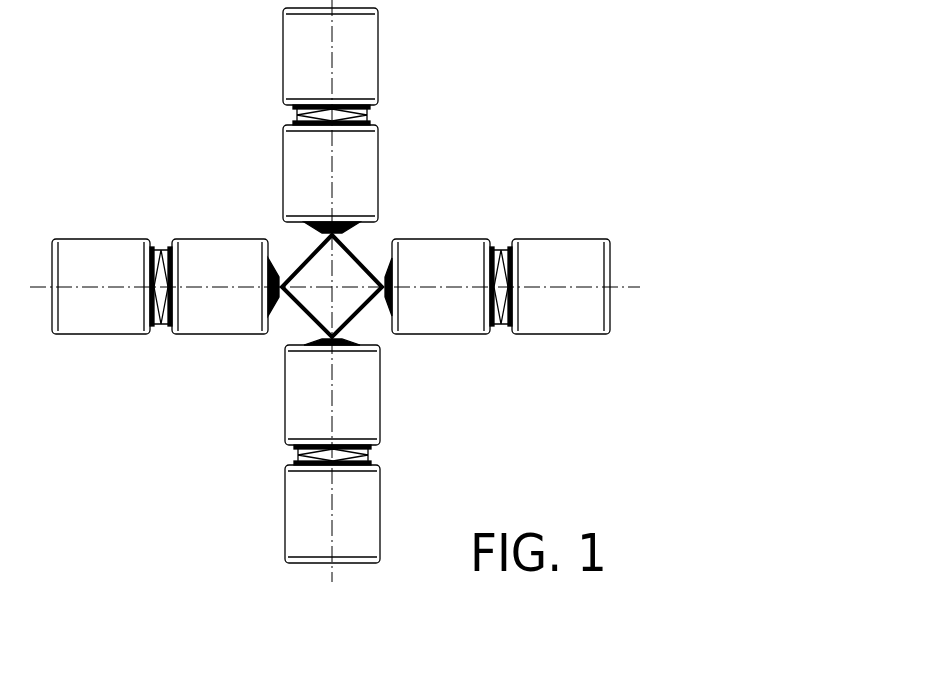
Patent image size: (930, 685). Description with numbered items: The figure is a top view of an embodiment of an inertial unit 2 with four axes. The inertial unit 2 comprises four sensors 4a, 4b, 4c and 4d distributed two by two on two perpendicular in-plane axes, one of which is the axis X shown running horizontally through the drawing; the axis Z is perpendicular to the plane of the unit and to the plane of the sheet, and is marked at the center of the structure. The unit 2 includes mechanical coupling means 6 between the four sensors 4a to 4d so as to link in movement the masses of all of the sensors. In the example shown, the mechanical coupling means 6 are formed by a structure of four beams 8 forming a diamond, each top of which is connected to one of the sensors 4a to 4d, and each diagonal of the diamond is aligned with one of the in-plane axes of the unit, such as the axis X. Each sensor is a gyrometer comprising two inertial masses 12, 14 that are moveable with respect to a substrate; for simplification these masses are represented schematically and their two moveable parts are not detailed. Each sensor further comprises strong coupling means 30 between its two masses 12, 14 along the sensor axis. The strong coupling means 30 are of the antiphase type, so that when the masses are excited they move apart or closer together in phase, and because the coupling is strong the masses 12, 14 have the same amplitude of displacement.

The inertial unit 2 is at (137, 103).
The sensor 4a is at (155, 348).
The sensor 4b is at (270, 108).
The sensor 4c is at (508, 224).
The sensor 4d is at (396, 462).
The mechanical coupling means 6 is at (292, 238).
The beam 8 is at (307, 321).
The inertial mass 12 is at (104, 232).
The inertial mass 14 is at (204, 232).
The strong coupling means 30 is at (292, 116).
The axis X is at (630, 287).
The axis Z is at (338, 282).